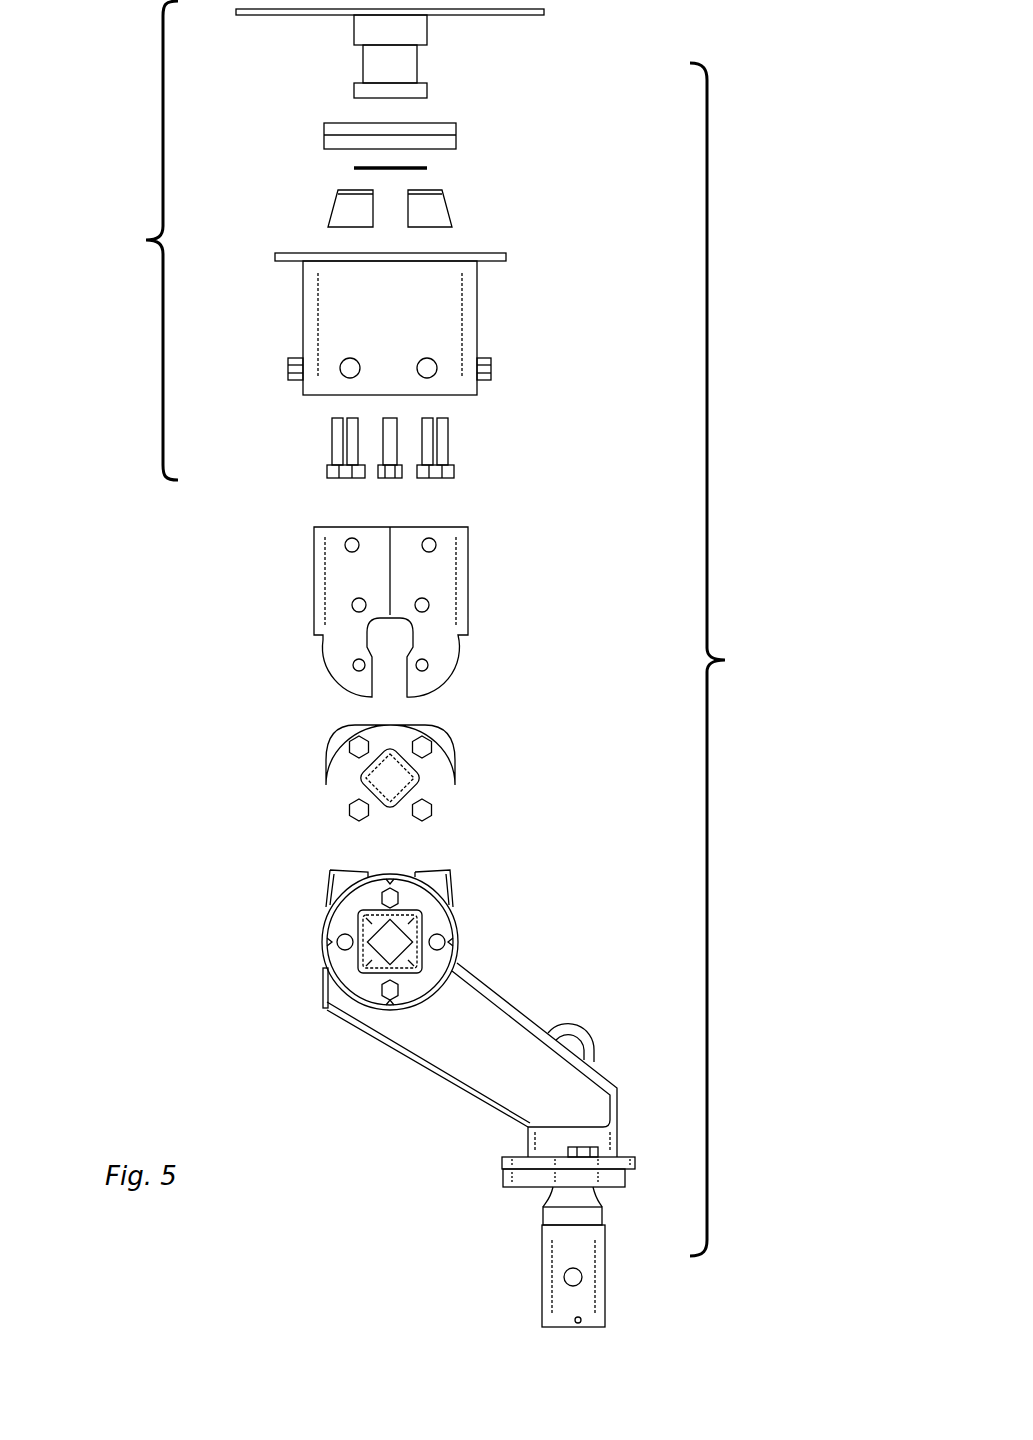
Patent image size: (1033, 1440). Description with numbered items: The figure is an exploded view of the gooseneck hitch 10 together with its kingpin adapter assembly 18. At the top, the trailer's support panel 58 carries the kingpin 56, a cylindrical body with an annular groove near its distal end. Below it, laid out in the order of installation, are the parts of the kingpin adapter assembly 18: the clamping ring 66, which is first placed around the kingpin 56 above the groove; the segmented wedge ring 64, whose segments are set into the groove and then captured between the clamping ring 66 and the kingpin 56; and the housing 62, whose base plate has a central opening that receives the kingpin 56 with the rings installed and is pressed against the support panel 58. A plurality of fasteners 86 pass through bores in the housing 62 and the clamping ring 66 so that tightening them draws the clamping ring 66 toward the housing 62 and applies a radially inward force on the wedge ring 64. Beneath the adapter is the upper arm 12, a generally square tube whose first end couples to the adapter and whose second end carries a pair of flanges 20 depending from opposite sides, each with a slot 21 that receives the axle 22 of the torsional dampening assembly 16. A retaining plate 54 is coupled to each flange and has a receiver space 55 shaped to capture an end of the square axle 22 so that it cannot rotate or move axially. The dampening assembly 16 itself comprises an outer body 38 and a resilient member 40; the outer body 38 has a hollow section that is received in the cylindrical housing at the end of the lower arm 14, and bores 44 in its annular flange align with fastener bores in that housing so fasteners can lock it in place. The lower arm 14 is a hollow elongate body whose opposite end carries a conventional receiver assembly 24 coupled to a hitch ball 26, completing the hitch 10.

The gooseneck hitch 10 is at (766, 298).
The upper arm 12 is at (401, 606).
The lower arm 14 is at (475, 1060).
The torsional dampening assembly 16 is at (400, 920).
The kingpin adapter assembly 18 is at (139, 240).
The flanges 20 is at (443, 670).
The slot 21 is at (363, 633).
The axle 22 is at (391, 923).
The receiver assembly 24 is at (648, 1102).
The hitch ball 26 is at (605, 1265).
The outer body 38 is at (412, 1007).
The resilient member 40 is at (413, 955).
The bores 44 is at (440, 937).
The retaining plate 54 is at (401, 773).
The receiver space 55 is at (362, 772).
The kingpin 56 is at (427, 90).
The support panel 58 is at (255, 15).
The housing 62 is at (477, 310).
The wedge ring 64 is at (442, 203).
The clamping ring 66 is at (324, 128).
The fasteners 86 is at (383, 440).